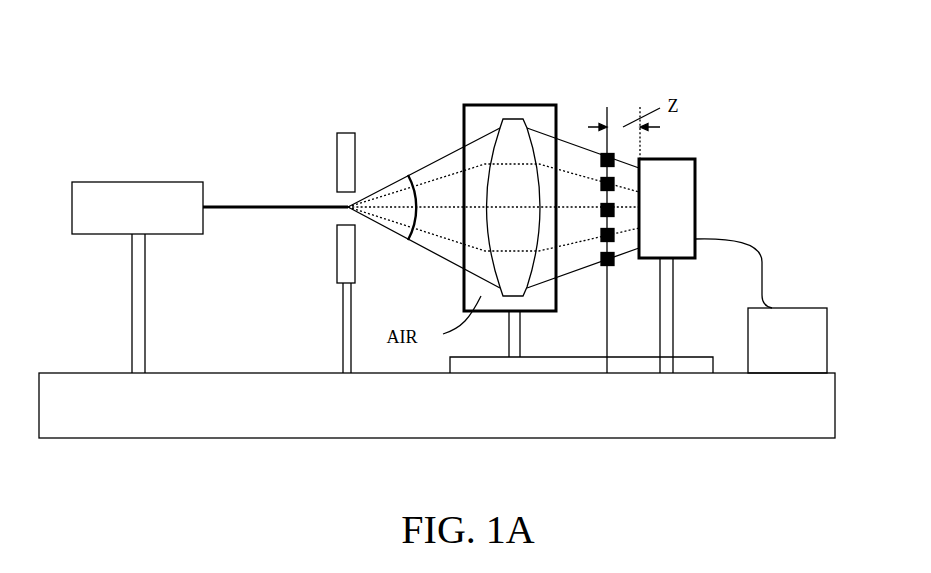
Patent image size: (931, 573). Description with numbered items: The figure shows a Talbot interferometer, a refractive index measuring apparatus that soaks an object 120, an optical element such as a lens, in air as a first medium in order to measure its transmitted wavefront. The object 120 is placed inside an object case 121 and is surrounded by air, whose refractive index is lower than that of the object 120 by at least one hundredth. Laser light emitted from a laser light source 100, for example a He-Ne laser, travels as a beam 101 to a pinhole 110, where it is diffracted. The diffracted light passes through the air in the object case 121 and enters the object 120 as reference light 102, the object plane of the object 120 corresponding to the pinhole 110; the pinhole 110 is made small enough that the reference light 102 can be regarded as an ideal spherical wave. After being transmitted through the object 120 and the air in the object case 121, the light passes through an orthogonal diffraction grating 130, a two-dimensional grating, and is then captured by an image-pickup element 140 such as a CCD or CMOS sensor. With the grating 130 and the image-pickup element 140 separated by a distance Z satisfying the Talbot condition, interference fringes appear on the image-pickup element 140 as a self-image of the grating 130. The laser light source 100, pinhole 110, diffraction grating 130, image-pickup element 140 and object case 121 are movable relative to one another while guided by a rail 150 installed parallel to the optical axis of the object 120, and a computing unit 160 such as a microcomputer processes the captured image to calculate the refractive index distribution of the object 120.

The laser light source 100 is at (137, 262).
The light beam 101 is at (275, 193).
The reference light 102 is at (413, 176).
The pinhole 110 is at (340, 234).
The object 120 is at (510, 137).
The object case 121 is at (463, 104).
The orthogonal diffraction grating 130 is at (595, 240).
The image-pickup element 140 is at (679, 251).
The rail 150 is at (550, 365).
The computing unit 160 is at (761, 306).